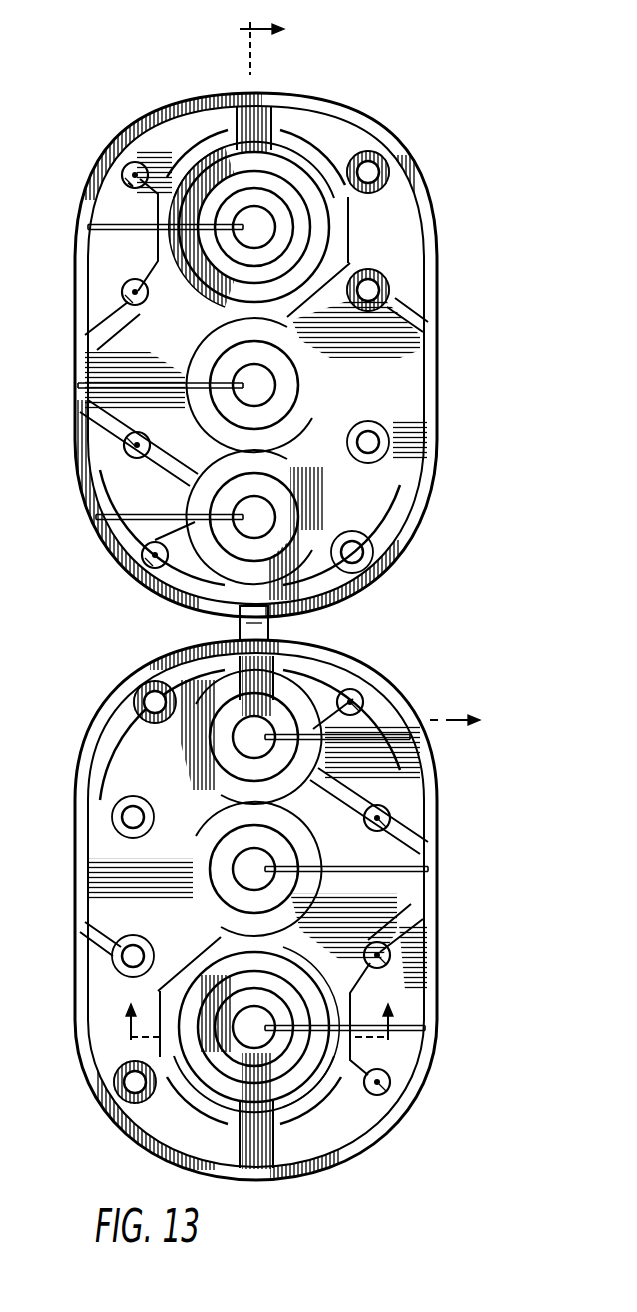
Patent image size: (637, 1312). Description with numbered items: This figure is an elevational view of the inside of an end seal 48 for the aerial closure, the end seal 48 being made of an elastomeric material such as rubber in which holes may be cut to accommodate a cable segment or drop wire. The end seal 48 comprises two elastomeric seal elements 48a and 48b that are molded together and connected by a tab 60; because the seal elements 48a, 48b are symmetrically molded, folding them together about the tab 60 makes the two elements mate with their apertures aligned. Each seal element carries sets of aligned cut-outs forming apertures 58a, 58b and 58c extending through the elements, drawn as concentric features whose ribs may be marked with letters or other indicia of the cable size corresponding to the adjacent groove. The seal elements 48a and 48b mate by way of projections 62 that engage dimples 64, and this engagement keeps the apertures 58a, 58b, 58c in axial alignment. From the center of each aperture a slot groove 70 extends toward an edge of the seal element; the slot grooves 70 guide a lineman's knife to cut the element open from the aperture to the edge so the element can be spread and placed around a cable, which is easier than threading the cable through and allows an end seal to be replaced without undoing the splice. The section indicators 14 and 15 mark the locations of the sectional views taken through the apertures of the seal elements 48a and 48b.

The section line 14- 14 is at (352, 381).
The section line 15- 15 is at (259, 1038).
The end seal 48 is at (146, 600).
The elastomeric seal element 48a is at (428, 197).
The elastomeric seal element 48b is at (443, 986).
The aperture 58a is at (272, 140).
The aperture 58b is at (300, 345).
The aperture 58c is at (285, 478).
The tab 60 is at (270, 630).
The projection 62 is at (130, 178).
The dimple 64 is at (372, 172).
The slot groove 70 is at (100, 228).